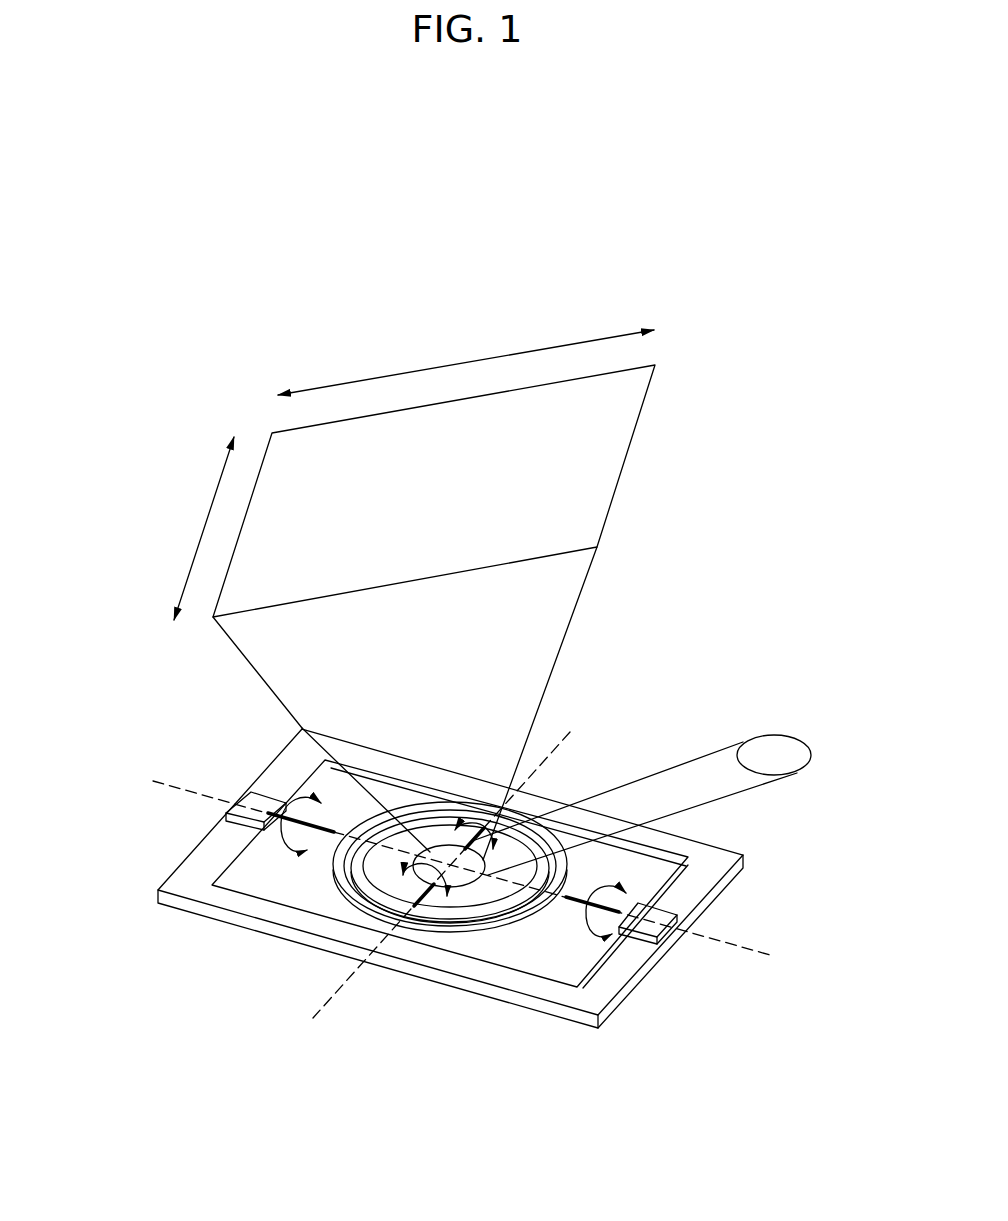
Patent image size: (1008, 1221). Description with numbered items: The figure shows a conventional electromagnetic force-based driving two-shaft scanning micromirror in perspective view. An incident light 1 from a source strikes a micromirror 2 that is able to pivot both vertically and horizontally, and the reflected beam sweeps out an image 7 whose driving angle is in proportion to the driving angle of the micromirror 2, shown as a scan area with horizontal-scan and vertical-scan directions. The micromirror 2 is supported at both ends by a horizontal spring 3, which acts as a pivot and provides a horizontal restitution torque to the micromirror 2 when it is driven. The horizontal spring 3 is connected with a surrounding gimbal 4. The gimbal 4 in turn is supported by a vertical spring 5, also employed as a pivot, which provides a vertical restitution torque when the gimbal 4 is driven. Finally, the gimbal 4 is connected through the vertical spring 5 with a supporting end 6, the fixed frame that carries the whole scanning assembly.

The incident light 1 is at (789, 759).
The micromirror 2 is at (432, 850).
The horizontal spring 3 is at (467, 832).
The gimbal 4 is at (360, 907).
The vertical spring 5 is at (576, 905).
The supporting end 6 is at (200, 879).
The image 7 is at (588, 477).